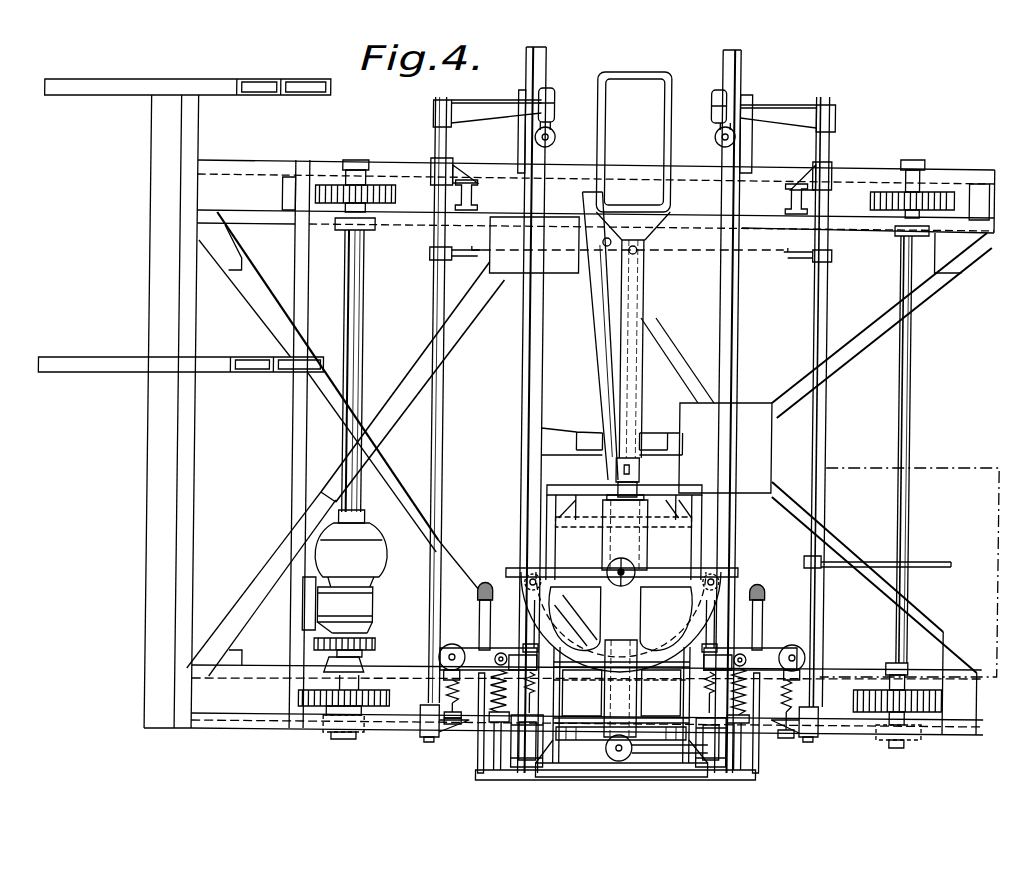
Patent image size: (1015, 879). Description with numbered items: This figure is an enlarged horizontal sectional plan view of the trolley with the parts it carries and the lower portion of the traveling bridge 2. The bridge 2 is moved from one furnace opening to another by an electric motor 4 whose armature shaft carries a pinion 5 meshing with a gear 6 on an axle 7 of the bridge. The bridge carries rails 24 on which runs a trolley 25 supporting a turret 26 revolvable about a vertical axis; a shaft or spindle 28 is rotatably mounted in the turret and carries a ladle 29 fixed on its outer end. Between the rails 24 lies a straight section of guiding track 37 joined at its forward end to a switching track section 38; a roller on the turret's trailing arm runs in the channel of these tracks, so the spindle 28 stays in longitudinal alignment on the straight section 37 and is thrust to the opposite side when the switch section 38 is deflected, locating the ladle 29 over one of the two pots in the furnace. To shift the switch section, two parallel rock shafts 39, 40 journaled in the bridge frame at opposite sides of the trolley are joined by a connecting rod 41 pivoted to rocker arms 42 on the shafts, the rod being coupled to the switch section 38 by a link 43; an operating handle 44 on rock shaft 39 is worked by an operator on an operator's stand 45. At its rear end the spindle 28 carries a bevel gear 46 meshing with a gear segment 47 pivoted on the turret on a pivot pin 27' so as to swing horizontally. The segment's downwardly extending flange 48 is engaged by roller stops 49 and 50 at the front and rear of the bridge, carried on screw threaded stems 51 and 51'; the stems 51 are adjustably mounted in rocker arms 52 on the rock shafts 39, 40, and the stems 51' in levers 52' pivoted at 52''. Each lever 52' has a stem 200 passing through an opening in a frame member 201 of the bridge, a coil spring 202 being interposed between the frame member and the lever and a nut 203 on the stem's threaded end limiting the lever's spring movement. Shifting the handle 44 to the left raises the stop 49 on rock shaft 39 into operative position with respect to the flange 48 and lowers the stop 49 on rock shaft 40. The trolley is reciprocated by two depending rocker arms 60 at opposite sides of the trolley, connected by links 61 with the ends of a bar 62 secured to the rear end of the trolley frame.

The traveling bridge 2 is at (148, 283).
The electric motor 4 is at (370, 556).
The pinion 5 is at (362, 643).
The gear 6 is at (378, 650).
The axle 7 is at (362, 350).
The rails 24 is at (736, 344).
The trolley 25 is at (553, 553).
The turret 26 is at (608, 540).
The pivot pin 27' is at (621, 620).
The shaft or spindle 28 is at (618, 366).
The ladle 29 is at (634, 156).
The straight section of guiding track 37 is at (641, 692).
The switching track section 38 is at (601, 342).
The rock shaft 39 is at (828, 410).
The rock shaft 40 is at (440, 418).
The connecting rod 41 is at (707, 256).
The rocker arms 42 is at (470, 260).
The link 43 is at (593, 265).
The operating handle 44 is at (935, 559).
The operator's stand 45 is at (968, 461).
The bevel gear 46 is at (432, 420).
The gear segment 47 is at (592, 680).
The flange 48 is at (680, 575).
The stop 49 is at (552, 137).
The stop 50 is at (543, 580).
The screw threaded stems 51 is at (632, 95).
The screw threaded stems 51' is at (632, 640).
The rocker arms 52 is at (634, 106).
The levers 52' is at (620, 643).
The pivot 52'' is at (630, 650).
The rocker arms 60 is at (482, 612).
The links 61 is at (482, 756).
The bar 62 is at (520, 770).
The stem 200 is at (488, 780).
The frame member 201 is at (460, 700).
The coil spring 202 is at (478, 690).
The nut 203 is at (498, 718).